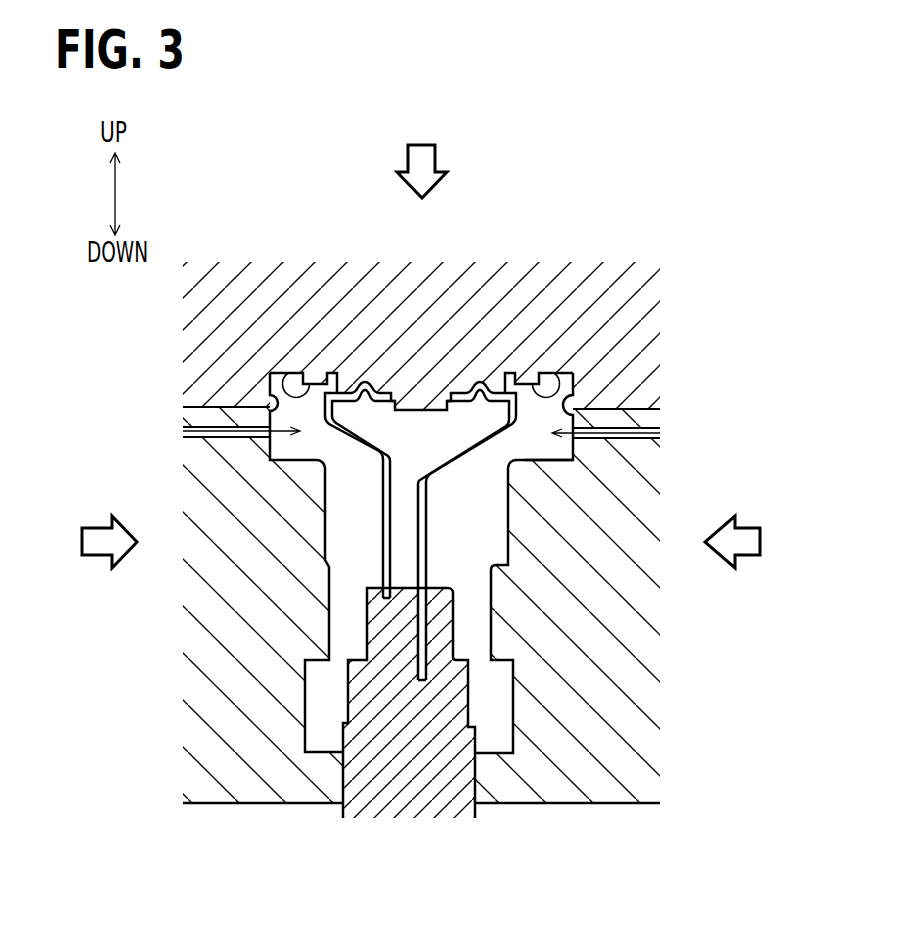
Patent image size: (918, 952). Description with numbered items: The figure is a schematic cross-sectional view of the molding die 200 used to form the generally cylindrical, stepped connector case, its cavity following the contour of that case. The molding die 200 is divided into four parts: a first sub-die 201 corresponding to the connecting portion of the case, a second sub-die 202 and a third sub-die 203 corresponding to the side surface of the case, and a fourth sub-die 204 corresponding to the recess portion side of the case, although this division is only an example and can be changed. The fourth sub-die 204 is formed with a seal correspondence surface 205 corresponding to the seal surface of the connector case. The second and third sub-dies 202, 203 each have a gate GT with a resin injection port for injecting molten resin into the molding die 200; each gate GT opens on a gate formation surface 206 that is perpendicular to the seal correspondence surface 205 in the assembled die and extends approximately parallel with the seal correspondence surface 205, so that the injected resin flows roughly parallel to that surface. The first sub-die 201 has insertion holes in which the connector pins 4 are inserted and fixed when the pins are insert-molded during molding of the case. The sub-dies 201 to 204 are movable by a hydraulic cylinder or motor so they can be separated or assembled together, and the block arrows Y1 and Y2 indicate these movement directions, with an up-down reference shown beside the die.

The connector pins 4 is at (385, 503).
The molding die 200 is at (642, 814).
The first sub-die 201 is at (367, 777).
The second sub-die 202 is at (542, 783).
The third sub-die 203 is at (238, 778).
The fourth sub-die 204 is at (378, 295).
The seal correspondence surface 205 is at (280, 372).
The gate formation surface 206 is at (268, 397).
The gates GT is at (183, 431).
The pressing direction Y1 is at (422, 149).
The lateral pressing direction Y2 is at (419, 542).